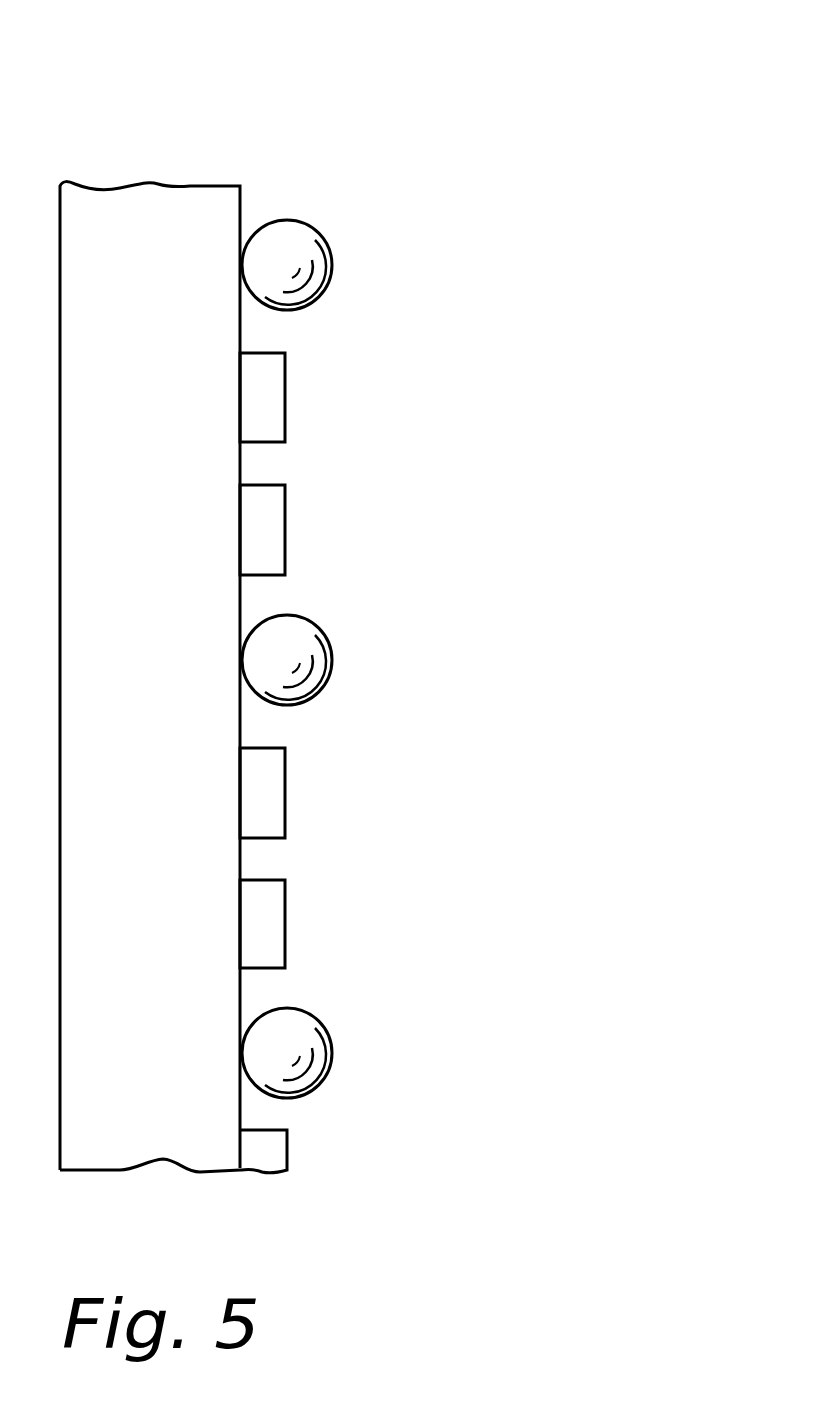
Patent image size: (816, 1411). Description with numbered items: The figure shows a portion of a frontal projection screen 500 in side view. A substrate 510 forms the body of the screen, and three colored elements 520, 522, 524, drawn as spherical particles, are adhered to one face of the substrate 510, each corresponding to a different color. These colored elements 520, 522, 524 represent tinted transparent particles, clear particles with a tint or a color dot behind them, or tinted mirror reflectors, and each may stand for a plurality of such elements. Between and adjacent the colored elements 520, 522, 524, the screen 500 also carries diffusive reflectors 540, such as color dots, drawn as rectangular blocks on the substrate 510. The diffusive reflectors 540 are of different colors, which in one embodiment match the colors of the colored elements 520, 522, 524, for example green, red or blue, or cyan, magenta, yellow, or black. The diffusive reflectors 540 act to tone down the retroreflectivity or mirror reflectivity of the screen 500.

The frontal projection screen 500 is at (285, 118).
The substrate 510 is at (175, 636).
The colored element 520 is at (322, 238).
The colored element 522 is at (323, 632).
The colored element 524 is at (323, 1023).
The diffusive reflector 540 is at (280, 383).